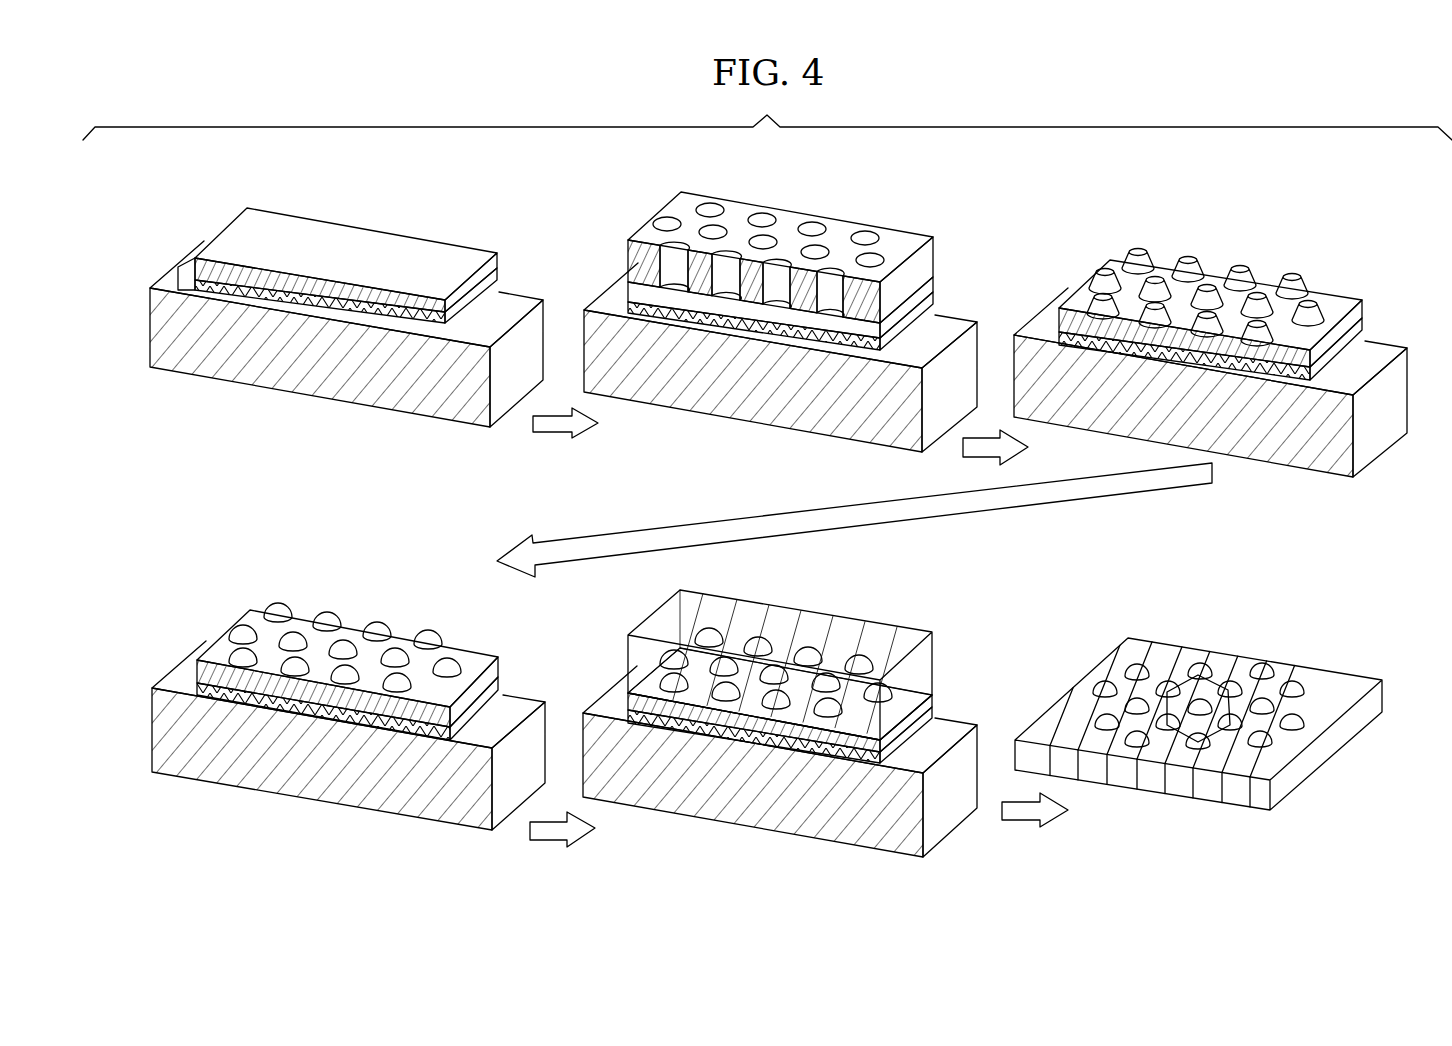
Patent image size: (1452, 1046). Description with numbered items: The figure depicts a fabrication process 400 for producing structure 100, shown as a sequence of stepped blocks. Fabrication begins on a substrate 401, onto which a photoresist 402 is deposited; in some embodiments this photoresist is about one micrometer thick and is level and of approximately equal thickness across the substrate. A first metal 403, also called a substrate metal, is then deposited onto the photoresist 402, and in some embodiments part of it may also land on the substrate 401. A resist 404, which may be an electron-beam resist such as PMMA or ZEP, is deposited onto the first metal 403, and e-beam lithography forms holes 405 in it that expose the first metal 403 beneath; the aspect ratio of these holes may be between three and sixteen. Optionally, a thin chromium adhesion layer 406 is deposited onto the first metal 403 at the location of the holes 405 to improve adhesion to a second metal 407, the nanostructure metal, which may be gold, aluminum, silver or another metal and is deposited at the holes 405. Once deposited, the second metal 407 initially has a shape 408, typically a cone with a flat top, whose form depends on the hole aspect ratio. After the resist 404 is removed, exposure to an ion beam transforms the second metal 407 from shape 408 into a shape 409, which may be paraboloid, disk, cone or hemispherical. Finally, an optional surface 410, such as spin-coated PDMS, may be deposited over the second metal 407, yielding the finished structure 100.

The fabrication process 400 is at (1322, 115).
The substrate 401 is at (293, 370).
The photoresist 402 is at (240, 305).
The first metal 403 is at (262, 240).
The resist 404 is at (743, 241).
The holes 405 is at (710, 211).
The layer 406 is at (777, 297).
The second metal 407 is at (1140, 262).
The shape 408 is at (1328, 320).
The shape 409 is at (222, 643).
The surface 410 is at (890, 640).
The structure 100 is at (1287, 818).